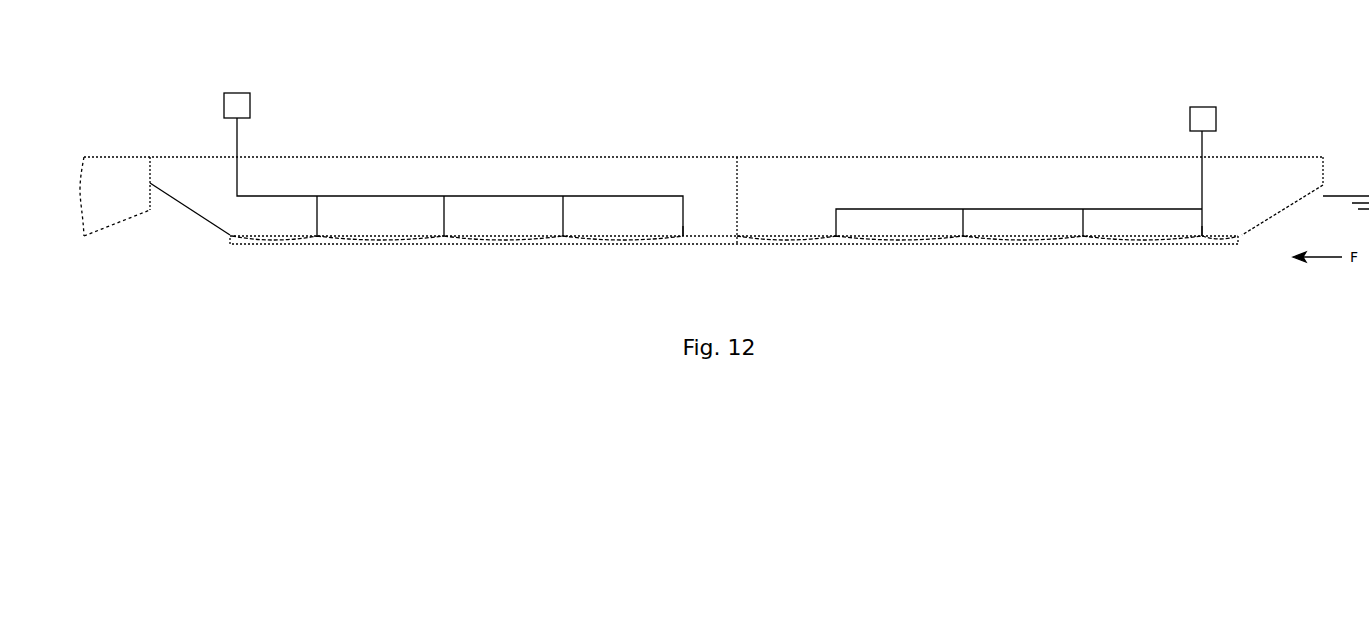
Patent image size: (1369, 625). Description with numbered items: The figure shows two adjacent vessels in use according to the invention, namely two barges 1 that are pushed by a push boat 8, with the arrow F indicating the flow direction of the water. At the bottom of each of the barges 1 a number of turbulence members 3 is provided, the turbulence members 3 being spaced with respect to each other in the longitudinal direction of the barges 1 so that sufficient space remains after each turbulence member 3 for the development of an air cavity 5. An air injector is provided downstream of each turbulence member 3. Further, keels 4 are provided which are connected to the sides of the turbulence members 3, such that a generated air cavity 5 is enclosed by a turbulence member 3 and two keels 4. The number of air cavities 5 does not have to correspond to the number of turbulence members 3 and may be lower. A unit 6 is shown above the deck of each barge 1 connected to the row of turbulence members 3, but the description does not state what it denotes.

The barge 1 is at (682, 167).
The turbulence member 3 is at (683, 237).
The keel 4 is at (1238, 240).
The air cavity 5 is at (1045, 238).
The control unit 6 is at (236, 100).
The push boat 8 is at (115, 157).